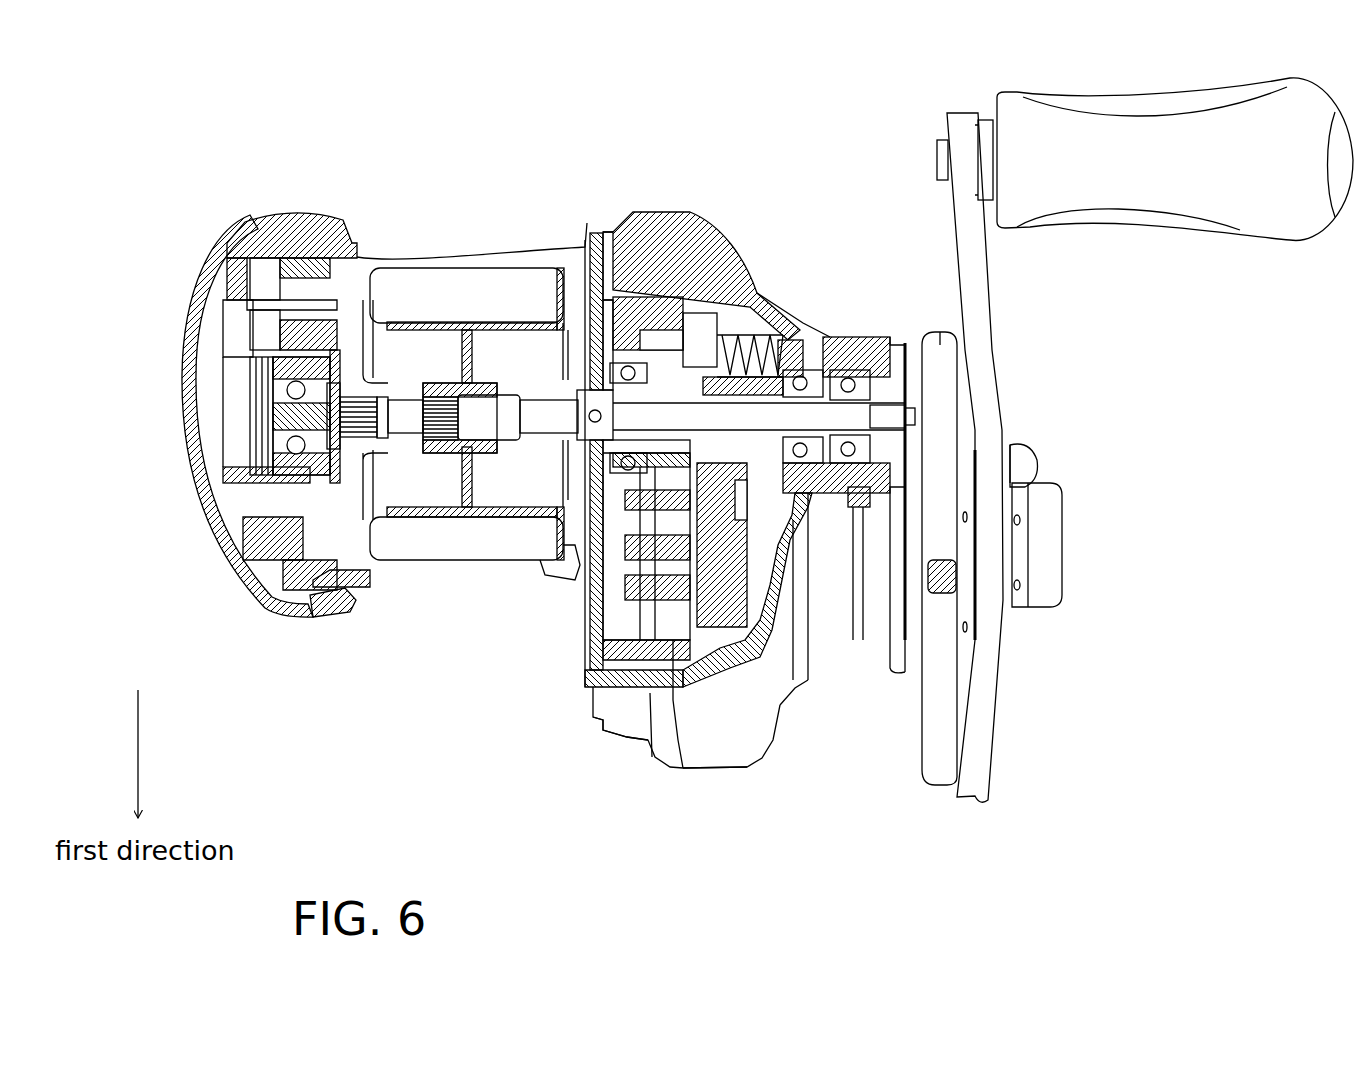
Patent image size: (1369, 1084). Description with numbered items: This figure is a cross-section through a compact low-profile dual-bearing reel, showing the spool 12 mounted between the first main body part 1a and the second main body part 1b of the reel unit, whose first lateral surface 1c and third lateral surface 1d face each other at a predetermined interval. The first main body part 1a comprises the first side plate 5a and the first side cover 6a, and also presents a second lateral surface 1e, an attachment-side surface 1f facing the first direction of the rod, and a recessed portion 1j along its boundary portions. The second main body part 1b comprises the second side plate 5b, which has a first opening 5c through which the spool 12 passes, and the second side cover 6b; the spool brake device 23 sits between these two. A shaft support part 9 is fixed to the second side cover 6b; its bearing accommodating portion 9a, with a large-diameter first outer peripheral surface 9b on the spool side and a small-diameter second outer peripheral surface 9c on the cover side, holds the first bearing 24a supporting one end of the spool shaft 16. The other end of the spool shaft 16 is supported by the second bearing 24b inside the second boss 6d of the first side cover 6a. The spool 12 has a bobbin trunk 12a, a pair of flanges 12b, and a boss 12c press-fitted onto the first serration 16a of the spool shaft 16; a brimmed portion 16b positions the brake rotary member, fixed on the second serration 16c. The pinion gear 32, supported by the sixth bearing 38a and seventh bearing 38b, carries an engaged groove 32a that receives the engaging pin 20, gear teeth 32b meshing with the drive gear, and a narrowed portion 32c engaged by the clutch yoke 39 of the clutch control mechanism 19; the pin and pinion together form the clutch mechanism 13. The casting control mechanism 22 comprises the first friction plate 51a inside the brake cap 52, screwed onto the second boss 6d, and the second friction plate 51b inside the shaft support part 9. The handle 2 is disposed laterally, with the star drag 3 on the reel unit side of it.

The first main body part 1a is at (681, 200).
The second main body part 1b is at (234, 204).
The first lateral surface 1c is at (588, 647).
The third lateral surface 1d is at (367, 585).
The second lateral surface 1e is at (790, 682).
The attachment-side surface 1f is at (683, 770).
The recessed portion 1j is at (632, 738).
The handle 2 is at (992, 660).
The star drag 3 is at (933, 768).
The first side plate 5a is at (588, 667).
The second side plate 5b is at (337, 615).
The first opening 5c is at (380, 377).
The first side cover 6a is at (738, 772).
The second side cover 6b is at (186, 306).
The second boss 6d is at (838, 512).
The shaft support part 9 is at (262, 263).
The bearing accommodating portion 9a is at (245, 433).
The first outer peripheral surface 9b is at (265, 548).
The second outer peripheral surface 9c is at (262, 485).
The spool 12 is at (417, 515).
The bobbin trunk 12a is at (497, 513).
The flanges 12b is at (557, 563).
The boss 12c is at (480, 448).
The clutch mechanism 13 is at (590, 385).
The spool shaft 16 is at (408, 440).
The first serration 16a is at (443, 391).
The brimmed portion 16b is at (440, 332).
The second serration 16c is at (355, 390).
The clutch control mechanism 19 is at (700, 343).
The engaging pin 20 is at (577, 395).
The casting control mechanism 22 is at (862, 510).
The spool brake device 23 is at (300, 308).
The first bearing 24a is at (253, 373).
The second bearing 24b is at (900, 330).
The pinion gear 32 is at (815, 365).
The engaged groove 32a is at (604, 380).
The gear teeth 32b is at (765, 340).
The narrowed portion 32c is at (752, 322).
The sixth bearing 38a is at (640, 330).
The seventh bearing 38b is at (823, 356).
The clutch yoke 39 is at (702, 325).
The first friction plate 51a is at (905, 372).
The second friction plate 51b is at (270, 417).
The brake cap 52 is at (905, 300).